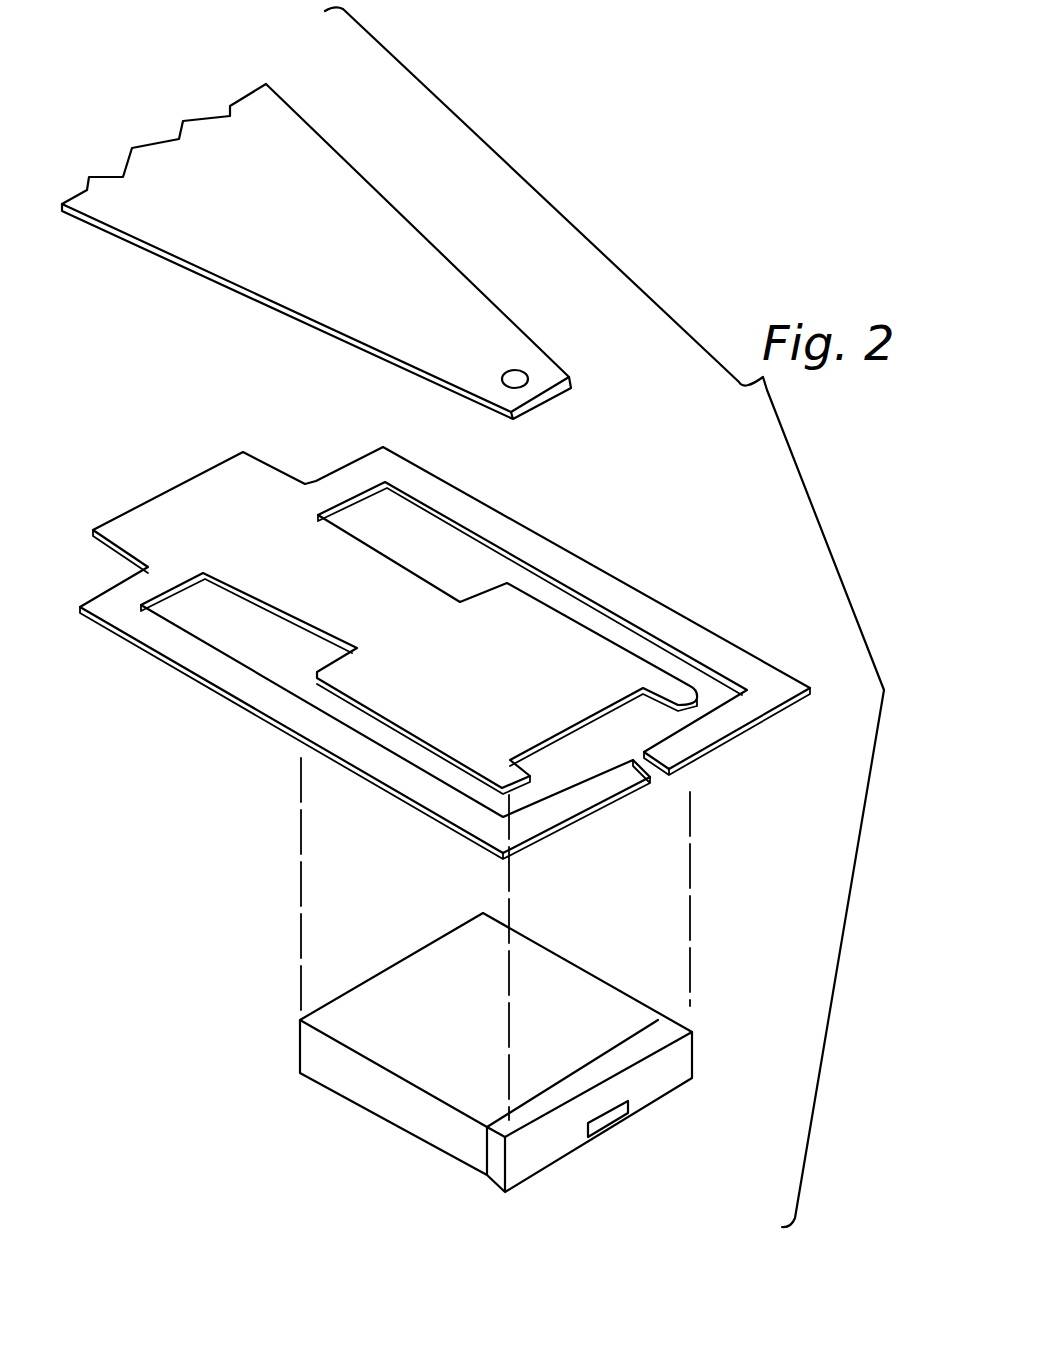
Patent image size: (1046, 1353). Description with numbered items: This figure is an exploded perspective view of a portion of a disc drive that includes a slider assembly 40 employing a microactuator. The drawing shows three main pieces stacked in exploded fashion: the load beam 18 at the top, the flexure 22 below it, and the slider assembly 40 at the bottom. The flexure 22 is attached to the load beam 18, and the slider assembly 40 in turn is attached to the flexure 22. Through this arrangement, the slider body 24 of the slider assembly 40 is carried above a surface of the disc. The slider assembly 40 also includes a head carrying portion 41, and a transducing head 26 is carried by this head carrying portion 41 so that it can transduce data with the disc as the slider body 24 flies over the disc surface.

The load beam 18 is at (329, 168).
The flexure 22 is at (560, 535).
The slider body 24 is at (585, 1025).
The transducing head 26 is at (605, 1127).
The slider assembly 40 is at (527, 1037).
The head carrying portion 41 is at (663, 1033).